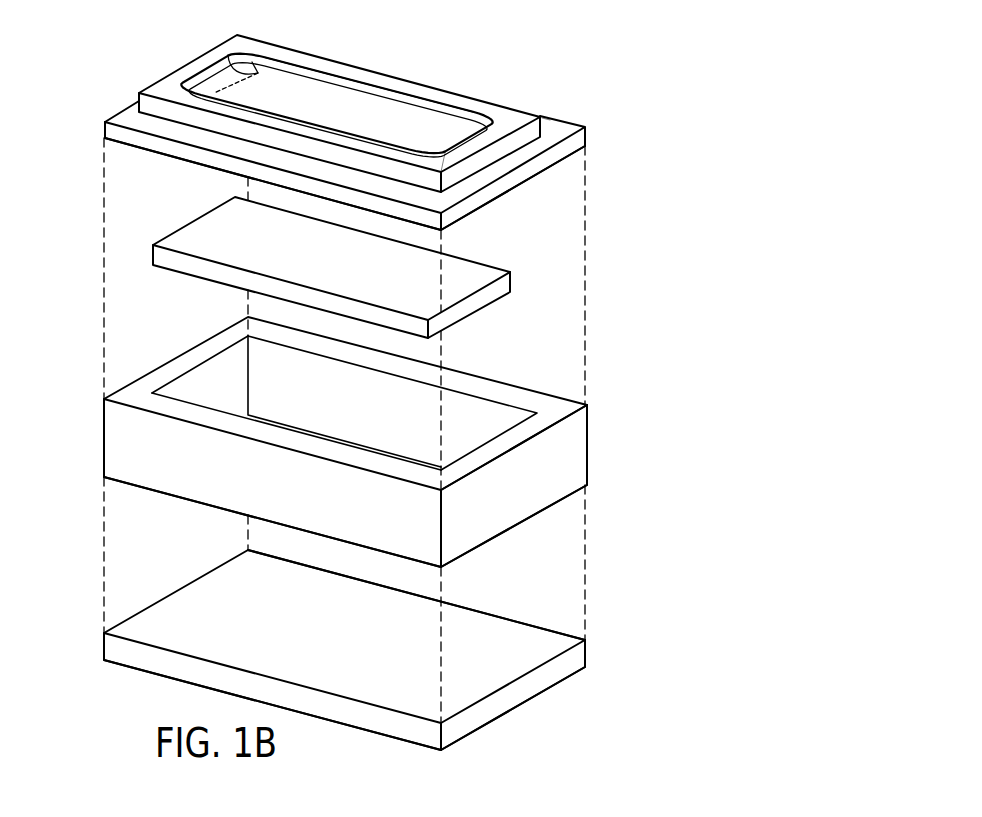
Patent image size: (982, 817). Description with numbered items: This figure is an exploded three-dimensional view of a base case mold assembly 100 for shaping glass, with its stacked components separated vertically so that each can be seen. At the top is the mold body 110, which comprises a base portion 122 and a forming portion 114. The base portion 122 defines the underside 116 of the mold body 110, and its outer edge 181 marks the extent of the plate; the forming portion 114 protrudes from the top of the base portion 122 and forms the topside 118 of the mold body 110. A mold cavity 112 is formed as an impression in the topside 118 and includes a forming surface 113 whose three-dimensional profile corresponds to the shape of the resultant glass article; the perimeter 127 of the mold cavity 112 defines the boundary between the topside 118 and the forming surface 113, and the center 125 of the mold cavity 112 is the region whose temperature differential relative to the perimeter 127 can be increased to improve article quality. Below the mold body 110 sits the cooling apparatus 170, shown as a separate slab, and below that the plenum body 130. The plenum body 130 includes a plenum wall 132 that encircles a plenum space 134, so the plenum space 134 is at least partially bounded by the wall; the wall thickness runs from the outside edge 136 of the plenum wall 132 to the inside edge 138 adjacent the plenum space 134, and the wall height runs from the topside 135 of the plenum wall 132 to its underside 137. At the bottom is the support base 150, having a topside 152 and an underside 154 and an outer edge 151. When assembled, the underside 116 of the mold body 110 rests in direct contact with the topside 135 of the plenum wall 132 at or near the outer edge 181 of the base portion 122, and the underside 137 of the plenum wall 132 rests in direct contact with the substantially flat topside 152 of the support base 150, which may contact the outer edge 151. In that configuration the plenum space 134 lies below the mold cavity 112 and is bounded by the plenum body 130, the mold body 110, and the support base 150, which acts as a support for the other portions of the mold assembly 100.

The mold assembly 100 is at (560, 79).
The mold body 110 is at (588, 134).
The mold cavity 112 is at (230, 92).
The forming surface 113 is at (268, 64).
The forming portion 114 is at (550, 120).
The underside of the mold body 116 is at (540, 173).
The topside of the mold body 118 is at (505, 113).
The base portion 122 is at (102, 124).
The center of the mold cavity 125 is at (332, 103).
The perimeter of the mold cavity 127 is at (405, 85).
The plenum body 130 is at (588, 447).
The plenum wall 132 is at (213, 343).
The plenum space 134 is at (478, 420).
The topside of the plenum wall 135 is at (508, 453).
The outside edge of the plenum wall 136 is at (170, 417).
The underside of the plenum wall 137 is at (523, 518).
The inside edge of the plenum wall 138 is at (178, 397).
The support base 150 is at (588, 652).
The outer edge of the support base 151 is at (372, 728).
The topside of the support base 152 is at (512, 630).
The underside of the support base 154 is at (518, 703).
The cooling apparatus 170 is at (492, 263).
The outer edge of the base portion 181 is at (158, 147).